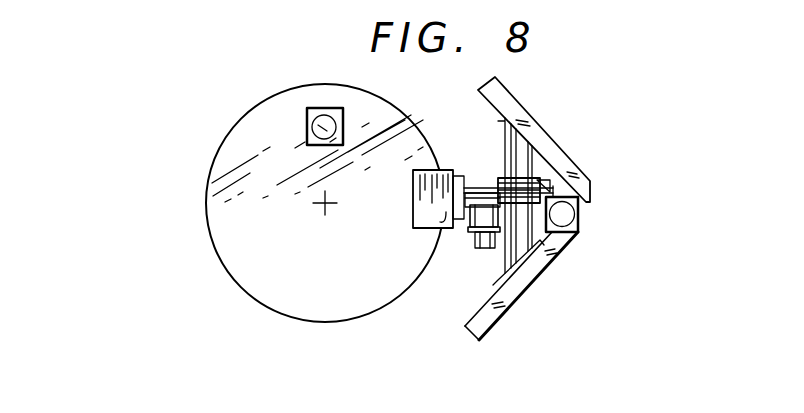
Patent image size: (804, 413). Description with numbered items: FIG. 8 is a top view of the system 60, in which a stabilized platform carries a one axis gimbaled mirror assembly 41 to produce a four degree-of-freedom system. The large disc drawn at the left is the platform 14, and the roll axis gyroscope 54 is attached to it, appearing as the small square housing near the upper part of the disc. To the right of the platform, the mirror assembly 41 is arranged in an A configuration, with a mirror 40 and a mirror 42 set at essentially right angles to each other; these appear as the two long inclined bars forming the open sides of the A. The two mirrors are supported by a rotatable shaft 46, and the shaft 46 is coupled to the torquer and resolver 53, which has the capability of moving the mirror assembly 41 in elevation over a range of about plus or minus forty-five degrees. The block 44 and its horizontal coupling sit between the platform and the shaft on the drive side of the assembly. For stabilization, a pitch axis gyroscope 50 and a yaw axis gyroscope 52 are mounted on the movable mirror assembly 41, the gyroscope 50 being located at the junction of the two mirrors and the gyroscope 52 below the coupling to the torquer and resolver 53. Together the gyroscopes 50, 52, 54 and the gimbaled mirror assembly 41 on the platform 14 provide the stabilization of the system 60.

The disc 14 is at (297, 99).
The roll axis gyroscope 54 is at (307, 126).
The system 60 is at (180, 171).
The mirror 42 is at (516, 112).
The drive block 44 is at (469, 188).
The torquer and resolver 53 is at (500, 181).
The rotatable shaft 46 is at (540, 175).
The pitch axis gyroscope 50 is at (564, 213).
The yaw axis gyroscope 52 is at (490, 249).
The mirror 40 is at (530, 273).
The one axis gimbaled mirror assembly 41 is at (592, 267).